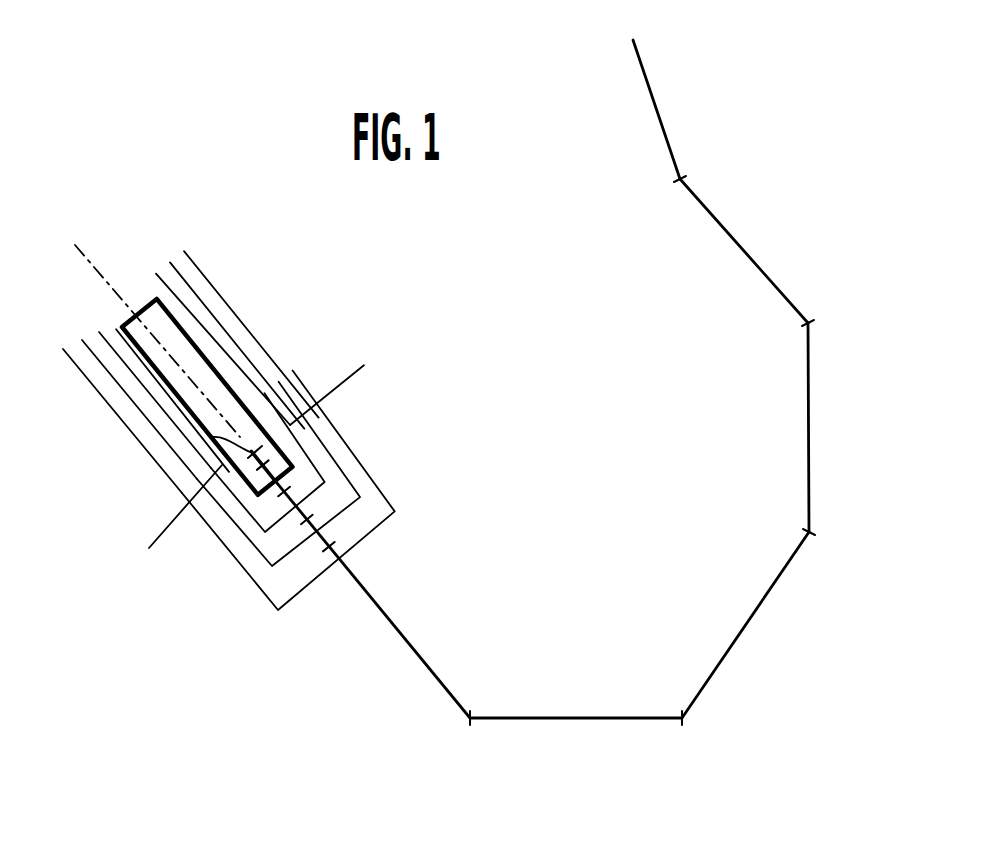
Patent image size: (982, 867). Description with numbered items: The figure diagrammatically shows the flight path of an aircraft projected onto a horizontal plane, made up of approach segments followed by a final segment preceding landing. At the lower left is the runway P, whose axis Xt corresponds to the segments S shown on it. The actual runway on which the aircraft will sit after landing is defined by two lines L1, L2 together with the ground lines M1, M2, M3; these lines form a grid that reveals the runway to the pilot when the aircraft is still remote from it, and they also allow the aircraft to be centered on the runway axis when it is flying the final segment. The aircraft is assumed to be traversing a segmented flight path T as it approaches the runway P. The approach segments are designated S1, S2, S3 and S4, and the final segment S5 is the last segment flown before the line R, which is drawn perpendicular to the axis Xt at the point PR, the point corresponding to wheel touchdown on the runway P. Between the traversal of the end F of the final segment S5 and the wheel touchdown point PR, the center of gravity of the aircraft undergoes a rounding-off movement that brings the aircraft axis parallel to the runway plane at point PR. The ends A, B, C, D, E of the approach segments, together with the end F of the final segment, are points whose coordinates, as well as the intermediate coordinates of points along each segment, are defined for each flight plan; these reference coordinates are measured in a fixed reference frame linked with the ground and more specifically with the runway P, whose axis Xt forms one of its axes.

The runway axis Xt is at (95, 258).
The runway P is at (121, 326).
The segments S is at (219, 354).
The line L1 is at (193, 275).
The line L2 is at (112, 400).
The ground line M1 is at (295, 403).
The ground line M2 is at (317, 437).
The ground line M3 is at (373, 478).
The line R is at (163, 532).
The wheel touchdown point PR is at (213, 437).
The end of the final segment F is at (262, 476).
The segmented flight path T is at (560, 379).
The approach segment S1 is at (732, 240).
The approach segment S2 is at (808, 435).
The approach segment S3 is at (760, 596).
The approach segment S4 is at (620, 717).
The final segment S5 is at (405, 638).
The end of approach segment A is at (695, 176).
The end of approach segment B is at (821, 326).
The end of approach segment C is at (821, 541).
The end of approach segment D is at (680, 736).
The end of approach segment E is at (453, 735).